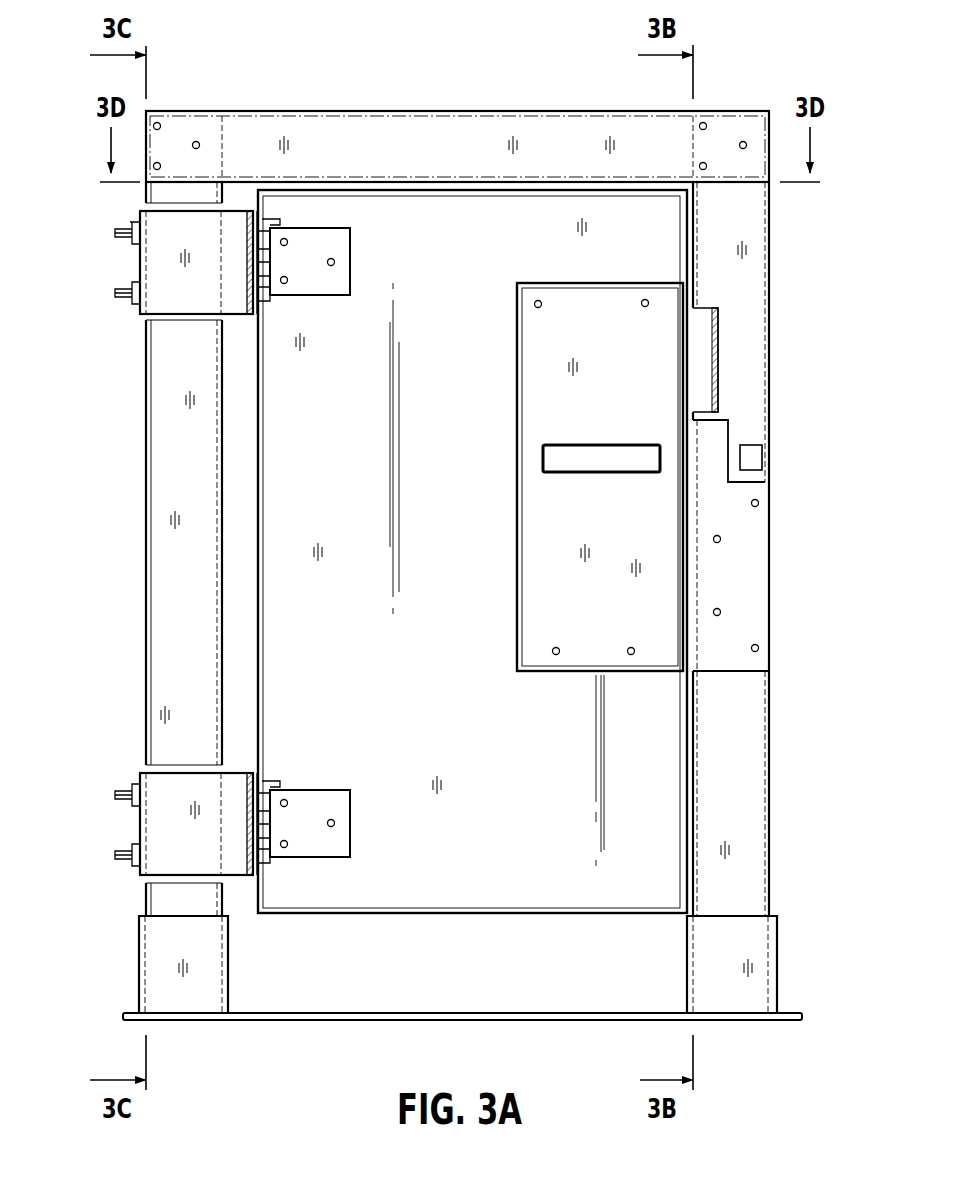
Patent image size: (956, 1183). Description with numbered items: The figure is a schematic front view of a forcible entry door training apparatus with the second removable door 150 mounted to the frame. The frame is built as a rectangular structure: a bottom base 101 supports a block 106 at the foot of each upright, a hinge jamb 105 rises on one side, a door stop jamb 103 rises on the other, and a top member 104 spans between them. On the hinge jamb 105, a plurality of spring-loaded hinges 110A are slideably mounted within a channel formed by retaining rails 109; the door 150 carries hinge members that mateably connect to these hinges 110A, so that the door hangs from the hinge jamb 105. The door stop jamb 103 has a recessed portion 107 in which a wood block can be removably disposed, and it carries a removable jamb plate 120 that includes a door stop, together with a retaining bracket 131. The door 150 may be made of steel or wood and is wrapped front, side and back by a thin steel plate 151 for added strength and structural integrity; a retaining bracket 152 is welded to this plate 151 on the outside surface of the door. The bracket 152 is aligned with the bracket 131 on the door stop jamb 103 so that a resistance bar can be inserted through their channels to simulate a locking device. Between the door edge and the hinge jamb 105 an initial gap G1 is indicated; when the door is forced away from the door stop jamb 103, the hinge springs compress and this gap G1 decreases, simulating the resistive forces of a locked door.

The base plate 101 is at (570, 1013).
The door stop jamb 103 is at (757, 326).
The top horizontal frame member 104 is at (570, 122).
The hinge jamb 105 is at (157, 356).
The base block 106 is at (210, 960).
The recessed portion 107 is at (706, 312).
The retaining rails 109 is at (157, 207).
The spring-loaded hinges 110A is at (305, 287).
The removable jamb plate 120 is at (753, 568).
The retaining bracket 131 is at (757, 458).
The second removable door 150 is at (470, 898).
The thin steel plate 151 is at (612, 656).
The retaining bracket 152 is at (560, 476).
The initial gap G1 is at (173, 578).